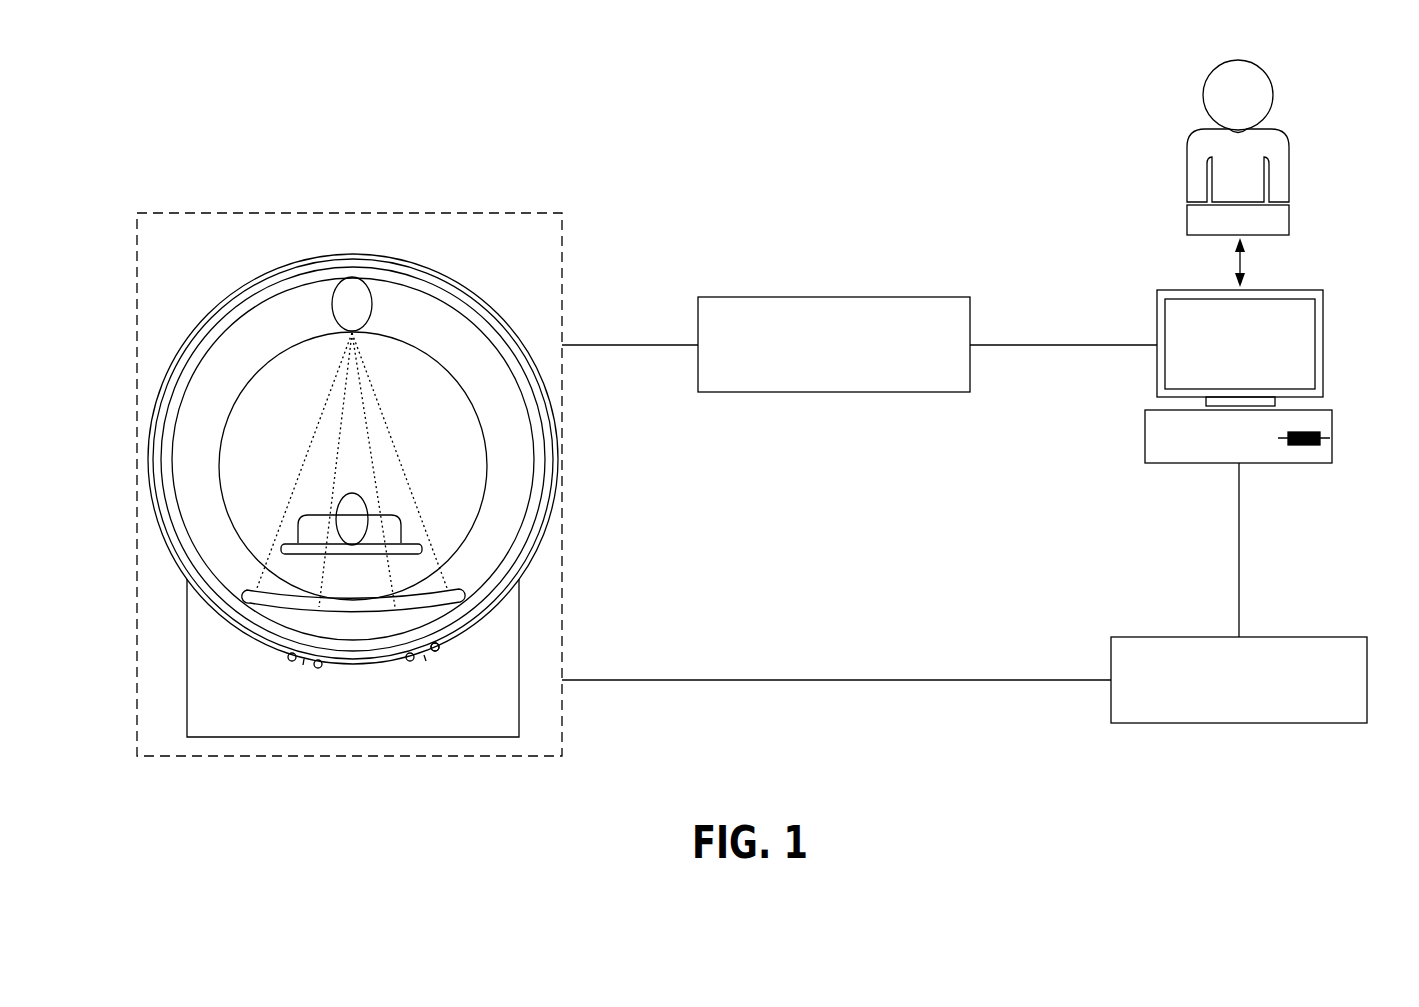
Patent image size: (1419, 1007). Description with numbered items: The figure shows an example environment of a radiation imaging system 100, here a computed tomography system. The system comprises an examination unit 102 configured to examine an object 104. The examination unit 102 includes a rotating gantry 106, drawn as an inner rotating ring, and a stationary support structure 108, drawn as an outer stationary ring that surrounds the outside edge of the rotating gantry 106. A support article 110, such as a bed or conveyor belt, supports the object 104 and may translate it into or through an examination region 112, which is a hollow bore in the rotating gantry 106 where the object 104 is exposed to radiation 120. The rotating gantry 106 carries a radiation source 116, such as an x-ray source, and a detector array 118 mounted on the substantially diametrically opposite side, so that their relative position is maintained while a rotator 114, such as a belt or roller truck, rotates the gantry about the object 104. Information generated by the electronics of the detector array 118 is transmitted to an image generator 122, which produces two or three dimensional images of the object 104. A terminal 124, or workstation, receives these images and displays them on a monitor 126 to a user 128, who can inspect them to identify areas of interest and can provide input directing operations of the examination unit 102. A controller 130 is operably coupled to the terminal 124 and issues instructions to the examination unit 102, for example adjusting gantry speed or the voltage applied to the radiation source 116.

The radiation imaging system 100 is at (256, 57).
The examination unit 102 is at (562, 213).
The object 104 is at (337, 503).
The rotating gantry 106 is at (268, 280).
The stationary support structure 108 is at (464, 277).
The support article 110 is at (290, 542).
The examination region 112 is at (333, 456).
The rotator 114 is at (439, 647).
The radiation source 116 is at (372, 307).
The detector array 118 is at (272, 612).
The radiation 120 is at (317, 425).
The image generator 122 is at (1330, 637).
The terminal 124 is at (1330, 410).
The monitor 126 is at (1323, 290).
The user 128 is at (1289, 143).
The controller 130 is at (835, 297).